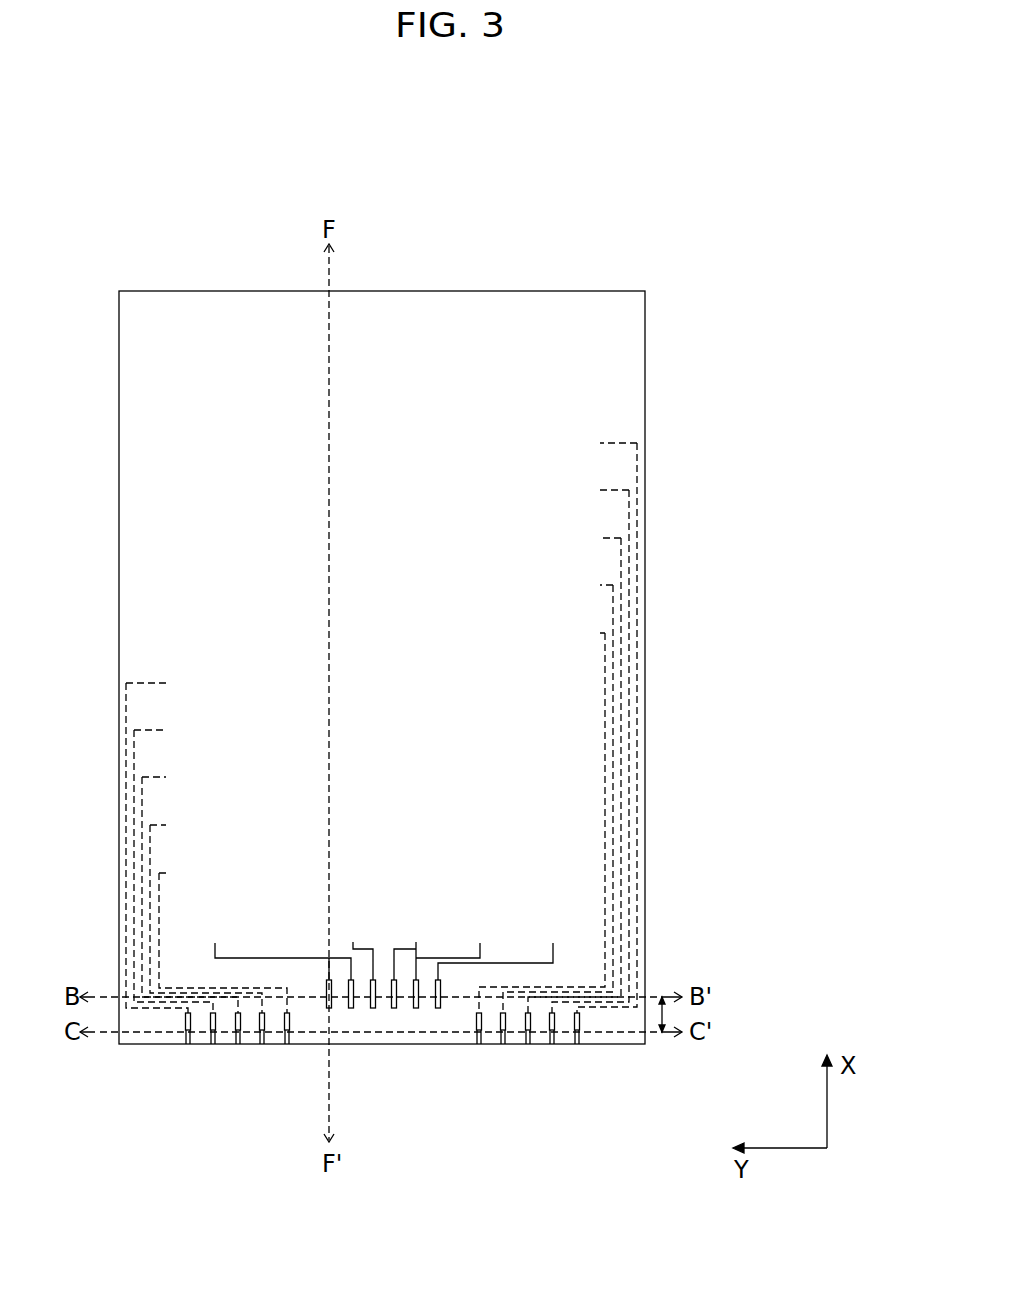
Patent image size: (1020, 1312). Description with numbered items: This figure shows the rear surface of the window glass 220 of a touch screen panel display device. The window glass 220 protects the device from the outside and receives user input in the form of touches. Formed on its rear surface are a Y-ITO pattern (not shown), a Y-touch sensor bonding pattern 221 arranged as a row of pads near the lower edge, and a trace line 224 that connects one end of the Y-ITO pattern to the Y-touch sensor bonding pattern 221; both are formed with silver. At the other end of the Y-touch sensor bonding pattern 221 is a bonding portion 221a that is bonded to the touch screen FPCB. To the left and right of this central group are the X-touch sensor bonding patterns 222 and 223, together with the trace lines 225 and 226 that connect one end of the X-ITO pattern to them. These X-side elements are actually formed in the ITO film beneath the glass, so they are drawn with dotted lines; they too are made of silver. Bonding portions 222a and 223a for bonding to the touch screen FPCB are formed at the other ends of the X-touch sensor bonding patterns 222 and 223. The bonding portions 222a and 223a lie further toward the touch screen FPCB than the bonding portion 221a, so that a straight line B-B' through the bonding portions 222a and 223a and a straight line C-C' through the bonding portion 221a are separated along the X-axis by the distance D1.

The window glass 220 is at (675, 259).
The Y-touch sensor bonding pattern 221 is at (384, 1000).
The bonding portion 221a is at (331, 1008).
The X-touch sensor bonding pattern 222 is at (197, 1063).
The bonding portion 222a is at (187, 1033).
The X-touch sensor bonding pattern 223 is at (570, 1063).
The bonding portion 223a is at (580, 1036).
The trace line 224 is at (227, 959).
The trace line 225 is at (126, 714).
The trace line 226 is at (638, 470).
The X-axis separation distance D1 is at (664, 1016).